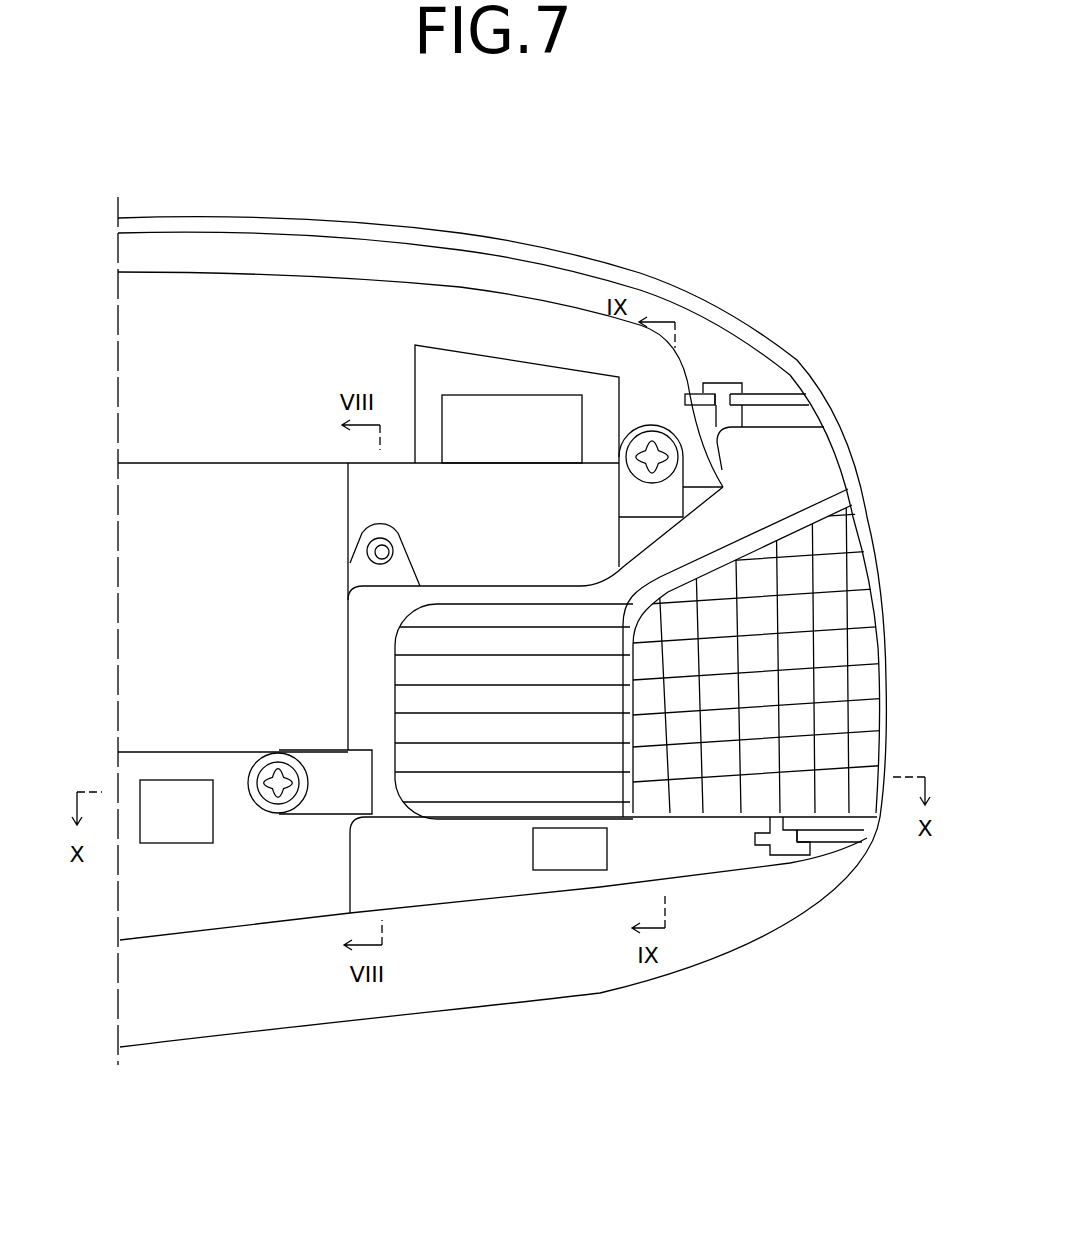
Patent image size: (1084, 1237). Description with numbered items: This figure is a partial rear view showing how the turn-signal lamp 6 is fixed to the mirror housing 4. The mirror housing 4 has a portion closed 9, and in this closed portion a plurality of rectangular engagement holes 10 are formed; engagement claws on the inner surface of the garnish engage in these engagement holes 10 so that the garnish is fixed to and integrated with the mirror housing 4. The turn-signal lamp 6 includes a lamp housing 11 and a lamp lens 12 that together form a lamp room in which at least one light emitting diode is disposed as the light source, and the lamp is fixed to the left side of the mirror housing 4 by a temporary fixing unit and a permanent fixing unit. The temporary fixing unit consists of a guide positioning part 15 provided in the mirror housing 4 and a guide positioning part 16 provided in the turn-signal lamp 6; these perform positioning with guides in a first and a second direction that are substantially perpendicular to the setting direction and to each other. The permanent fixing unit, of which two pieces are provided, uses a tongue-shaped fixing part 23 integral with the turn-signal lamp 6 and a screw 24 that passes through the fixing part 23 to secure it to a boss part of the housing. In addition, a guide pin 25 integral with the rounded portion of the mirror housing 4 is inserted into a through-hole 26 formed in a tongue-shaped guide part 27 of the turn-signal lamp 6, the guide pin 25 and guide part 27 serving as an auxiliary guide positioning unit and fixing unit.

The mirror housing 4 is at (258, 212).
The turn-signal lamp 6 is at (892, 602).
The portion closed 9 is at (395, 322).
The engagement holes 10 is at (480, 395).
The lamp housing 11 is at (790, 463).
The lamp lens 12 is at (860, 533).
The guide positioning part 15 is at (766, 397).
The guide positioning part 16 is at (722, 383).
The fixing part 23 is at (622, 452).
The screw 24 is at (652, 455).
The guide pin 25 is at (392, 556).
The through-hole 26 is at (370, 545).
The guide part 27 is at (357, 572).